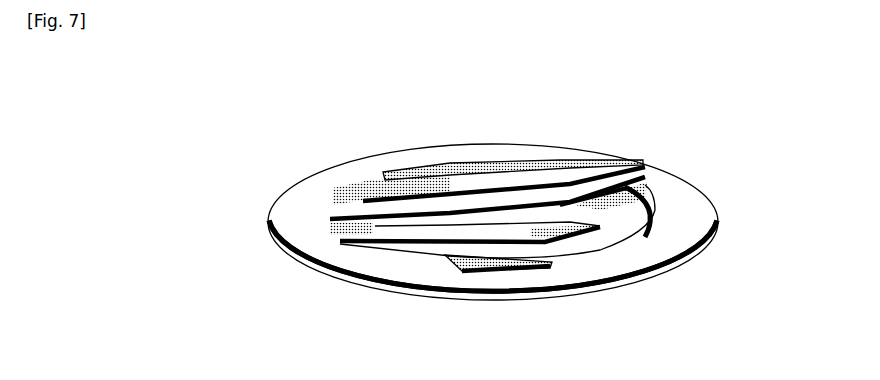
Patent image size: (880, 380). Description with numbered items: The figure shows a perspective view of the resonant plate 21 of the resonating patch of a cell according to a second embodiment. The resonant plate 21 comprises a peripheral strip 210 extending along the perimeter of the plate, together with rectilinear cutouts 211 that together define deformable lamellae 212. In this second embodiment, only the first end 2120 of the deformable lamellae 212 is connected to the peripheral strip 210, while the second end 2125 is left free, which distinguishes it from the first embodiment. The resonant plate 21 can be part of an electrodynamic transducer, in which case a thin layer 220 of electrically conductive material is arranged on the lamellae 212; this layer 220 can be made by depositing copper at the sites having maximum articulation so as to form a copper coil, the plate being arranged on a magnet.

The resonant plate 21 is at (351, 286).
The peripheral strip 210 is at (688, 202).
The rectilinear cutouts 211 is at (533, 215).
The deformable lamellae 212 is at (458, 212).
The thin layer of electrically conductive material 220 is at (427, 162).
The first end 2120 is at (370, 177).
The second end 2125 is at (627, 200).